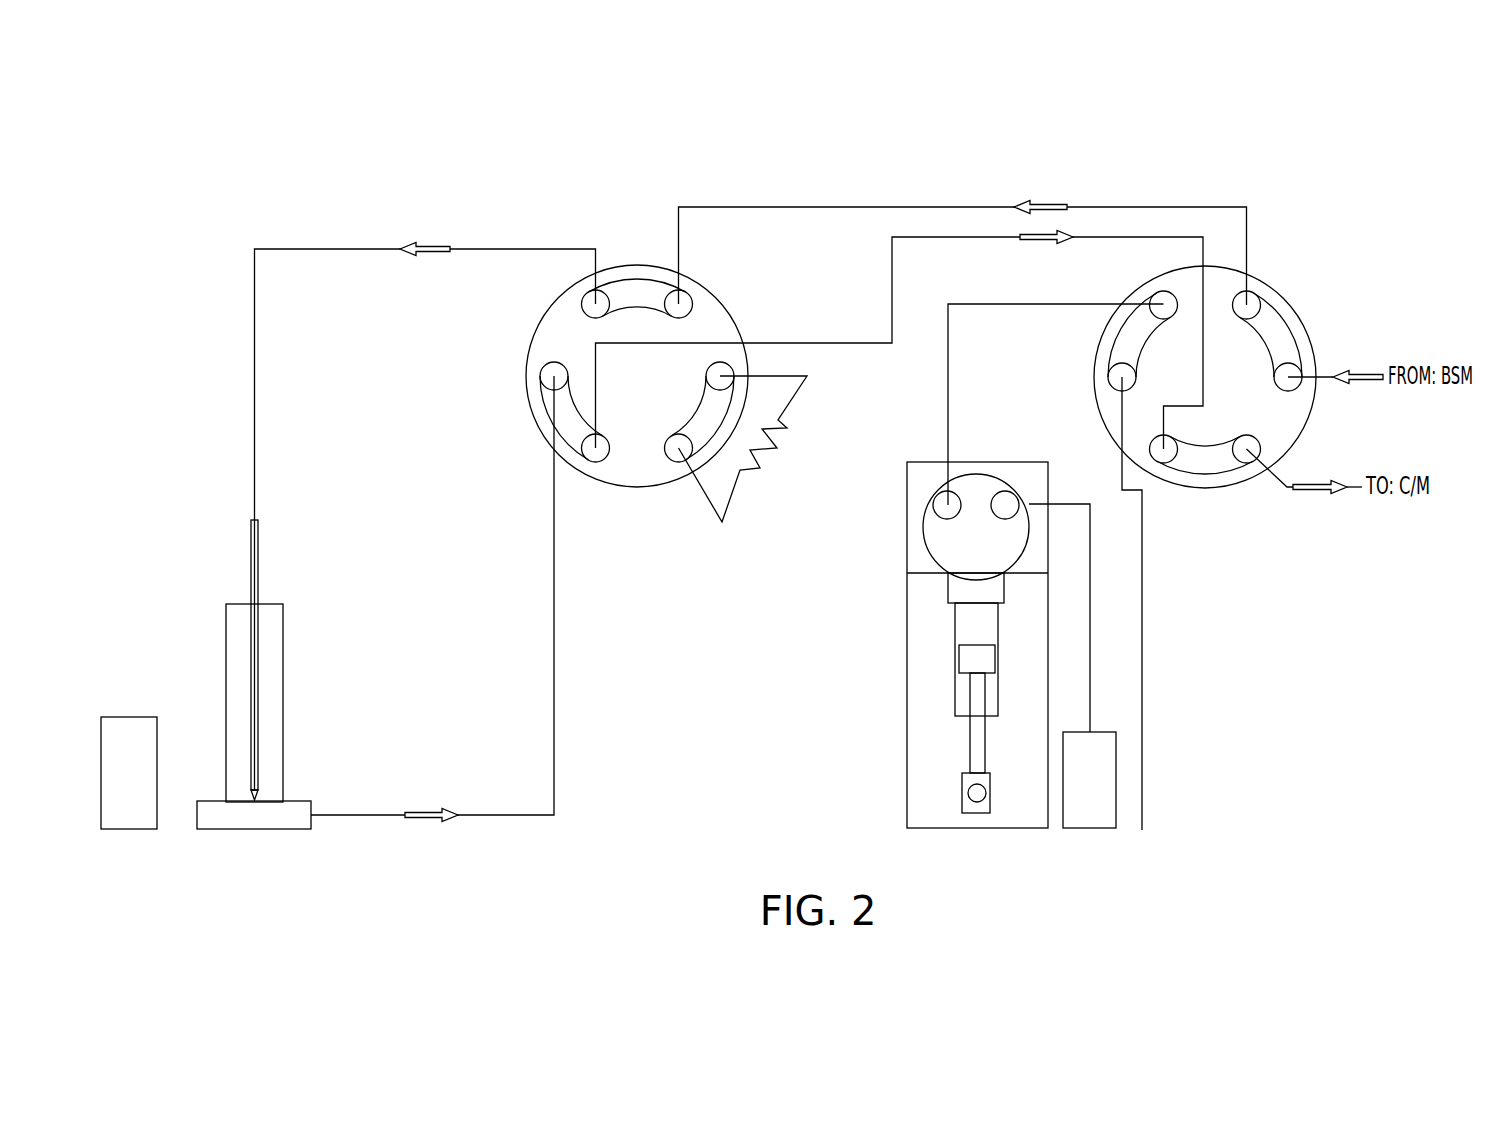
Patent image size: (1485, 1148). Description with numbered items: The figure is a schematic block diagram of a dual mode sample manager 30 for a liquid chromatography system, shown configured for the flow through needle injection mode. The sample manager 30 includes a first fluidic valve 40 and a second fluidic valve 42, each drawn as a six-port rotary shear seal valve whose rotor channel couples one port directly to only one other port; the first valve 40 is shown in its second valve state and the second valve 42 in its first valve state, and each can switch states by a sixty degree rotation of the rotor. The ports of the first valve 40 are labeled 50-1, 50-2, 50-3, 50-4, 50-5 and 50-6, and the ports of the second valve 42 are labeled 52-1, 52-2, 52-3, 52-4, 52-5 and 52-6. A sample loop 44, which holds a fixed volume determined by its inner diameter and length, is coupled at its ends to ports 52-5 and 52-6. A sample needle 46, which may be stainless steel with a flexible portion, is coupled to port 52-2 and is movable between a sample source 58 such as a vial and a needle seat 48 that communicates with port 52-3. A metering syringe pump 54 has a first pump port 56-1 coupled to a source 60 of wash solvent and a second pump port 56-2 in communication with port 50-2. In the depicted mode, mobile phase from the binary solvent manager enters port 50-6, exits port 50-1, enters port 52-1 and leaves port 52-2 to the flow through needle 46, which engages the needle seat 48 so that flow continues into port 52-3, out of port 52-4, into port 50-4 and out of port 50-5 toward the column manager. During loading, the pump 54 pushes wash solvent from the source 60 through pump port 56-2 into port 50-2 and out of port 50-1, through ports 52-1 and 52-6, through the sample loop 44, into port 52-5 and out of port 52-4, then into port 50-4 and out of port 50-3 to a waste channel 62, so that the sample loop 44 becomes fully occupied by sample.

The dual mode sample manager 30 is at (378, 153).
The first fluidic valve 40 is at (1311, 342).
The second fluidic valve 42 is at (741, 335).
The sample loop 44 is at (765, 466).
The sample needle 46 is at (251, 562).
The needle seat 48 is at (307, 801).
The port 1 of first valve 50-1 is at (1260, 301).
The port 2 of first valve 50-2 is at (1156, 292).
The port 3 of first valve 50-3 is at (1108, 378).
The port 4 of first valve 50-4 is at (1165, 463).
The port 5 of first valve 50-5 is at (1248, 463).
The port 6 of first valve 50-6 is at (1302, 385).
The port 1 of second valve 52-1 is at (693, 300).
The port 2 of second valve 52-2 is at (582, 300).
The port 3 of second valve 52-3 is at (540, 378).
The port 4 of second valve 52-4 is at (598, 462).
The port 5 of second valve 52-5 is at (681, 462).
The port 6 of second valve 52-6 is at (734, 372).
The pump 54 is at (907, 686).
The first pump port 56-1 is at (1008, 491).
The second pump port 56-2 is at (933, 503).
The sample source 58 is at (129, 830).
The source of wash solvent 60 is at (1090, 829).
The waste channel 62 is at (1142, 668).